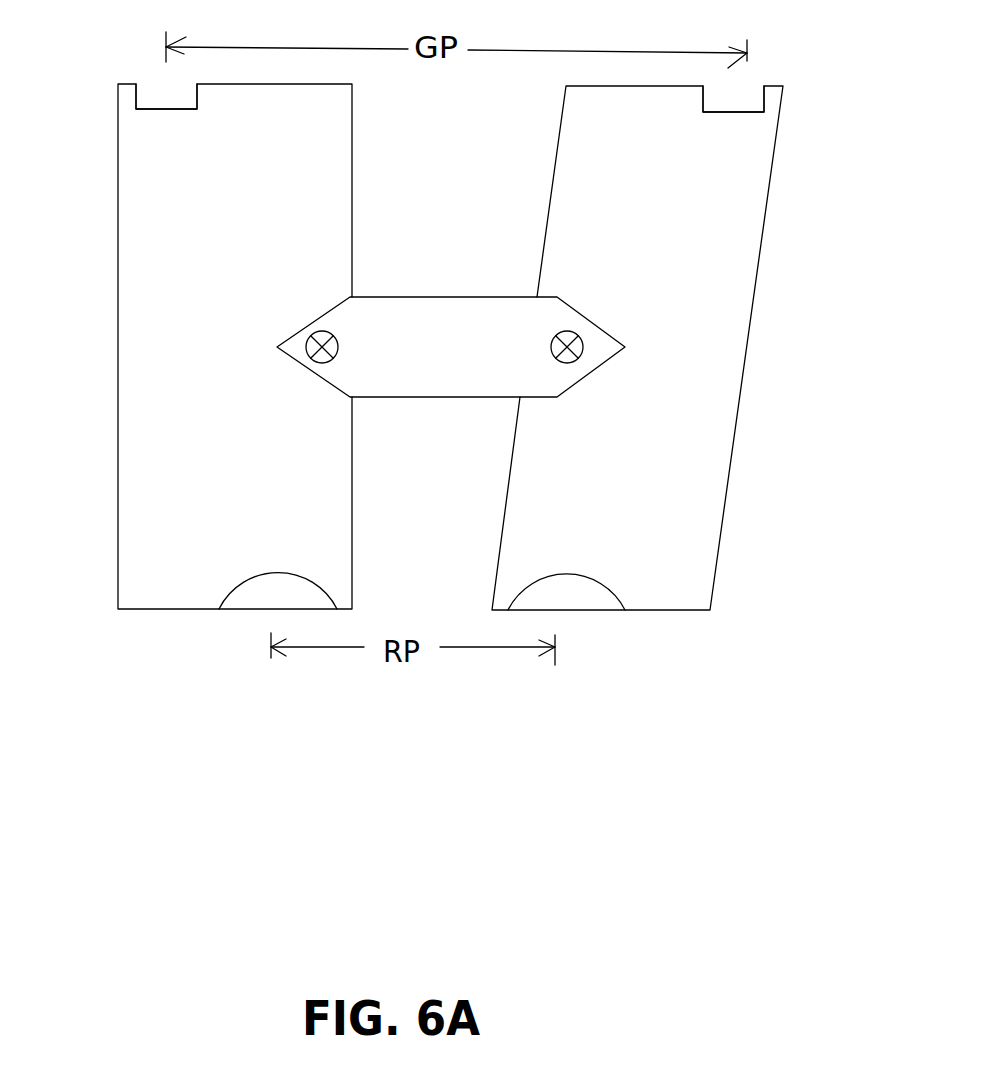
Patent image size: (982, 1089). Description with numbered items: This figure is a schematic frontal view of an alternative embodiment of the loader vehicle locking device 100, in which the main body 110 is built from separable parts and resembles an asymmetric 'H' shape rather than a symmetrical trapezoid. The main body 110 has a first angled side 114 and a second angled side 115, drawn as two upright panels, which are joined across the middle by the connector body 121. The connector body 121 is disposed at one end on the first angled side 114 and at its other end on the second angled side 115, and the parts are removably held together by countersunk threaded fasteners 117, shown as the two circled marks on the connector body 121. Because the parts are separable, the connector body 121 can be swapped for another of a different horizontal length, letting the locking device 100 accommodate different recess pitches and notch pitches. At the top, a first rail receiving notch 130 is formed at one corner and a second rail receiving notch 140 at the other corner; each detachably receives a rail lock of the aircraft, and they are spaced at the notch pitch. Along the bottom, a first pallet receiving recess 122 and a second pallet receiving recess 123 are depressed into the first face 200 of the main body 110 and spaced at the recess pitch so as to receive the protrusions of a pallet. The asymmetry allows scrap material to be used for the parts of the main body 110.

The loader vehicle locking device 100 is at (711, 800).
The main body 110 is at (814, 537).
The first angled side 114 is at (135, 350).
The second angled side 115 is at (718, 333).
The threaded fasteners 117 is at (332, 333).
The connector body 121 is at (453, 322).
The first pallet receiving recess 122 is at (235, 602).
The second pallet receiving recess 123 is at (600, 602).
The first rail receiving notch 130 is at (157, 93).
The second rail receiving notch 140 is at (750, 98).
The first face 200 is at (262, 472).